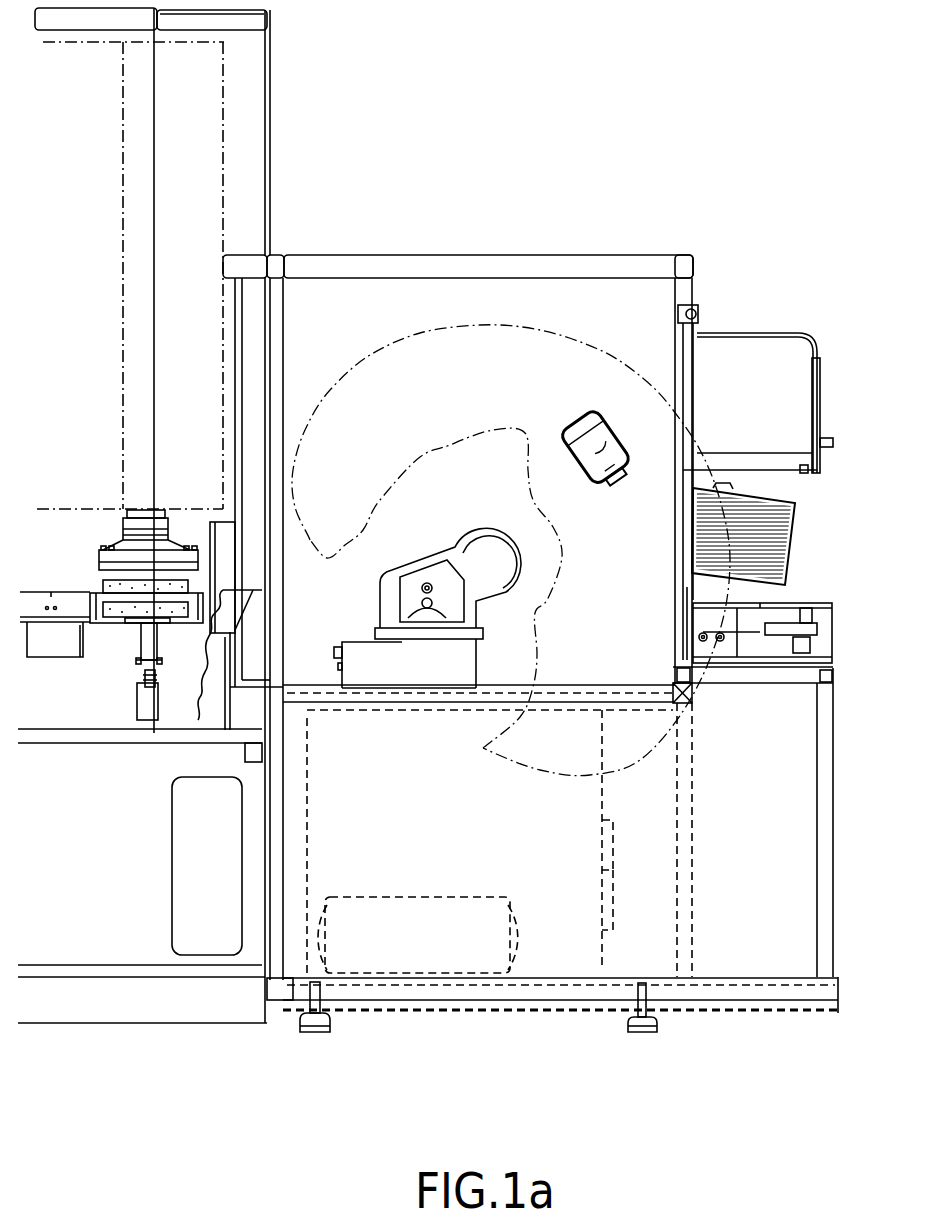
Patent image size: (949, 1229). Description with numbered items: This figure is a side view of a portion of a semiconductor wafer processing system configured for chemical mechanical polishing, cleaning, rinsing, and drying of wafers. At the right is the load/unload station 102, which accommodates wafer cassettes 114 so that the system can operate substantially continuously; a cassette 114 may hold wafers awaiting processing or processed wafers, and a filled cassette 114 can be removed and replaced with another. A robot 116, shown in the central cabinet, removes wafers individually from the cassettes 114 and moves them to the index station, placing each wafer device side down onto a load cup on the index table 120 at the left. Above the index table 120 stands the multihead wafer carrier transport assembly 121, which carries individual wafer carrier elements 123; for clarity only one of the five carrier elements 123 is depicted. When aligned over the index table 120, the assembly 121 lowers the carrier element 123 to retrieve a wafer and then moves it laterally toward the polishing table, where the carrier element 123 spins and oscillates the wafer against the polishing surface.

The load/unload station 102 is at (848, 519).
The wafer cassette 114 is at (793, 545).
The robot 116 is at (457, 547).
The index table 120 is at (64, 666).
The multihead wafer carrier transport assembly 121 is at (222, 182).
The wafer carrier element 123 is at (120, 547).